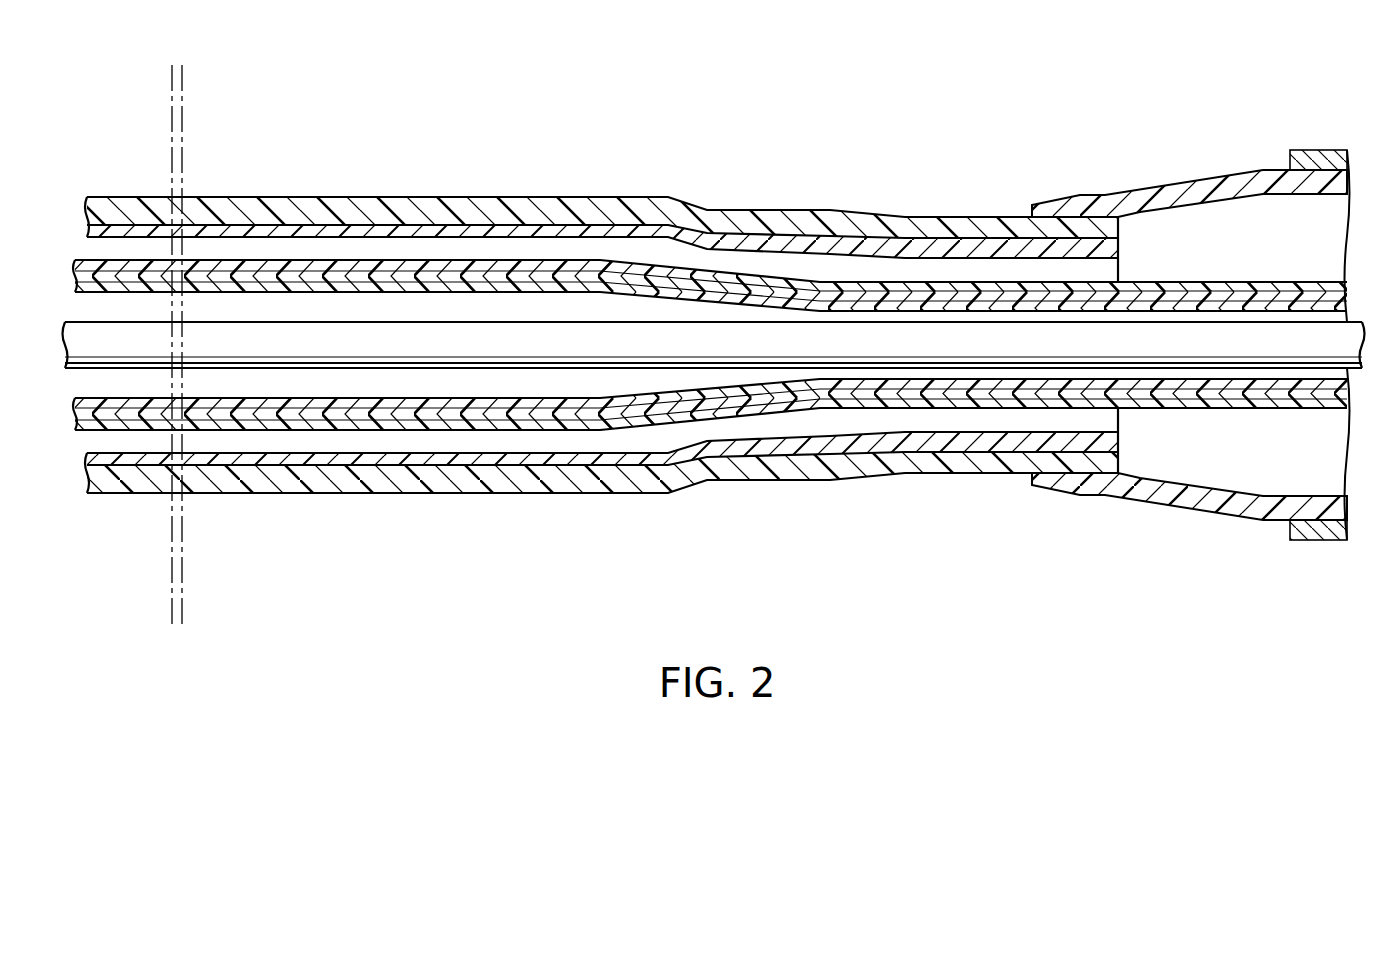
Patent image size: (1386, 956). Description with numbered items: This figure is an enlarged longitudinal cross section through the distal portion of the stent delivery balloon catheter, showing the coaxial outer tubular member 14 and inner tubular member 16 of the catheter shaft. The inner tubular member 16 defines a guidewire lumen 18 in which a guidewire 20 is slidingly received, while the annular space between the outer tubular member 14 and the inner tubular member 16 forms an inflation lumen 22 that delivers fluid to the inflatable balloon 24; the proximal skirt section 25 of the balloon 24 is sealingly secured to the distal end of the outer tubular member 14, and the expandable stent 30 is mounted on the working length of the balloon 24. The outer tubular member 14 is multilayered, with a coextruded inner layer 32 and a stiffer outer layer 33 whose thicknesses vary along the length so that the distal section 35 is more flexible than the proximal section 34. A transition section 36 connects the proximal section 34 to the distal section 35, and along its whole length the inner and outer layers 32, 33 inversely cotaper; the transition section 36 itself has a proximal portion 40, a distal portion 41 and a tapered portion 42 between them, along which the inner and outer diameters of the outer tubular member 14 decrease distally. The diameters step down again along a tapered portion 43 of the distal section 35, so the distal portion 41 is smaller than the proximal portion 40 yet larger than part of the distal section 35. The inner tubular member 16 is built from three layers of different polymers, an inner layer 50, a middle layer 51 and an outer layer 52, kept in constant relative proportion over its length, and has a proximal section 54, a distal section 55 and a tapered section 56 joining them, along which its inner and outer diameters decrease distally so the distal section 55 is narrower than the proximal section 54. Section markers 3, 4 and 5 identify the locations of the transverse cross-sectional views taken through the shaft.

The outer tubular member 14 is at (923, 473).
The inner tubular member 16 is at (430, 422).
The guidewire lumen 18 is at (327, 390).
The guidewire 20 is at (280, 350).
The inflation lumen 22 is at (523, 437).
The inflatable balloon 24 is at (1195, 178).
The proximal skirt section 25 is at (1087, 493).
The expandable stent 30 is at (1322, 523).
The inner layer 32 is at (1112, 248).
The outer layer 33 is at (1107, 232).
The proximal section 34 is at (262, 95).
The distal section 35 is at (1118, 195).
The transition section 36 is at (262, 197).
The proximal portion 40 is at (668, 197).
The distal portion 41 is at (830, 168).
The tapered portion 42 is at (707, 210).
The tapered portion 43 is at (905, 215).
The inner layer 50 is at (1282, 388).
The middle layer 51 is at (1233, 405).
The outer layer 52 is at (1163, 405).
The proximal section 54 is at (600, 595).
The distal section 55 is at (830, 595).
The tapered section 56 is at (600, 595).
The line 3- 3 is at (143, 188).
The section line 4- 4 is at (1000, 202).
The section line 5- 5 is at (1322, 140).